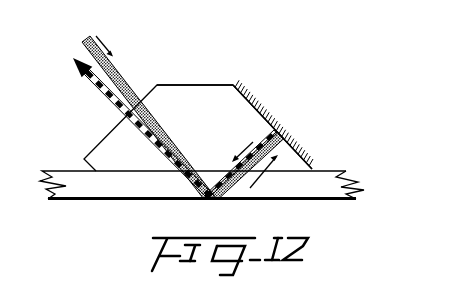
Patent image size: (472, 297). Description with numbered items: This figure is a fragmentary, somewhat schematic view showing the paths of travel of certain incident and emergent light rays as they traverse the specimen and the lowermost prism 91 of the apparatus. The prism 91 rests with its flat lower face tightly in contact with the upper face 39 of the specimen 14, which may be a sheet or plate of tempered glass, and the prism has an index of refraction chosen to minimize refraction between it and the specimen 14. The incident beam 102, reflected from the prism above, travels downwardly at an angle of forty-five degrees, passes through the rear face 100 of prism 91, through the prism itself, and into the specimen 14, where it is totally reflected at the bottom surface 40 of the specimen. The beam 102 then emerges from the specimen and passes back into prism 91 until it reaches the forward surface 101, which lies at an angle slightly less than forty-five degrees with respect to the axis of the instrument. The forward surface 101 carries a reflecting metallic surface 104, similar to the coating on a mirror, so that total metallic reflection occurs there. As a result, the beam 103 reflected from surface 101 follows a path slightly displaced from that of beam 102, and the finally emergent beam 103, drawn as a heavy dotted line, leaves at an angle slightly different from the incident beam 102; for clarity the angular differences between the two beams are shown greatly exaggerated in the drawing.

The specimen 14 is at (143, 189).
The upper face 39 is at (326, 170).
The bottom surface 40 is at (70, 202).
The lowermost prism 91 is at (198, 80).
The rear face 100 is at (109, 133).
The forward surface 101 is at (255, 110).
The incident light beam 102 is at (113, 69).
The reflected light beam 103 is at (92, 84).
The reflecting metallic surface 104 is at (251, 108).